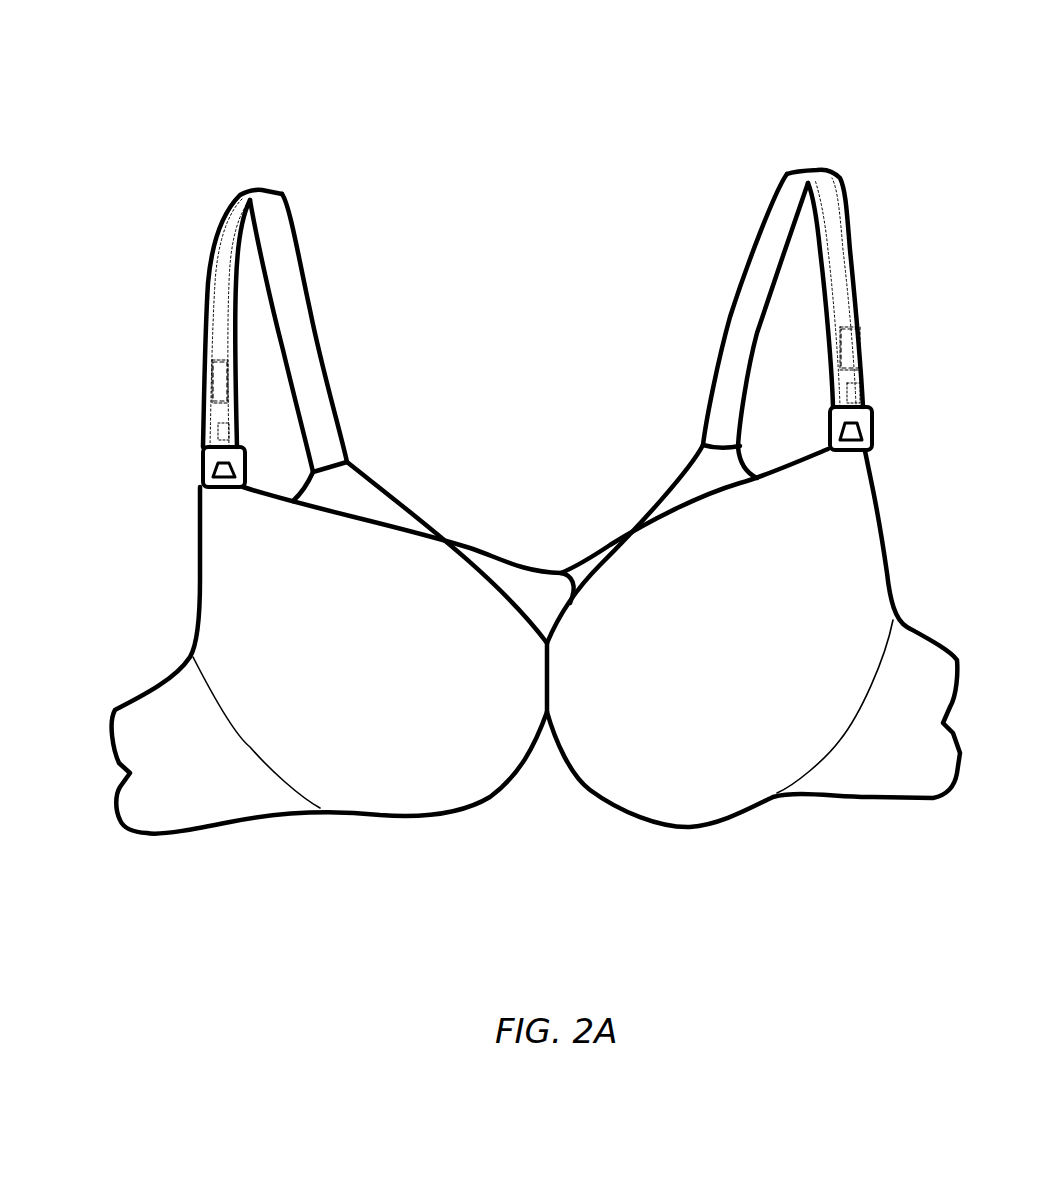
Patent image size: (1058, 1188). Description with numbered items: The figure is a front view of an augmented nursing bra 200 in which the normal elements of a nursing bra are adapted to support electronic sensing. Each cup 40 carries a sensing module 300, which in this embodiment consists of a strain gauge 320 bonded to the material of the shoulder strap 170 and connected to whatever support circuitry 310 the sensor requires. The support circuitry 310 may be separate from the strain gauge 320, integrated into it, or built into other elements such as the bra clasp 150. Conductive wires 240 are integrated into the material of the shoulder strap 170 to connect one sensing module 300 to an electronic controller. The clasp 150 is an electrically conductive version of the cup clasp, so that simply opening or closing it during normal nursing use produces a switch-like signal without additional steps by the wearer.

The augmented nursing bra 200 is at (637, 146).
The cup 40 is at (343, 680).
The conductive wires 240 is at (223, 218).
The shoulder strap 170 is at (282, 228).
The sensing module 300 is at (177, 342).
The support circuitry 310 is at (203, 384).
The strain gauge 320 is at (230, 432).
The clasp 150 is at (199, 469).